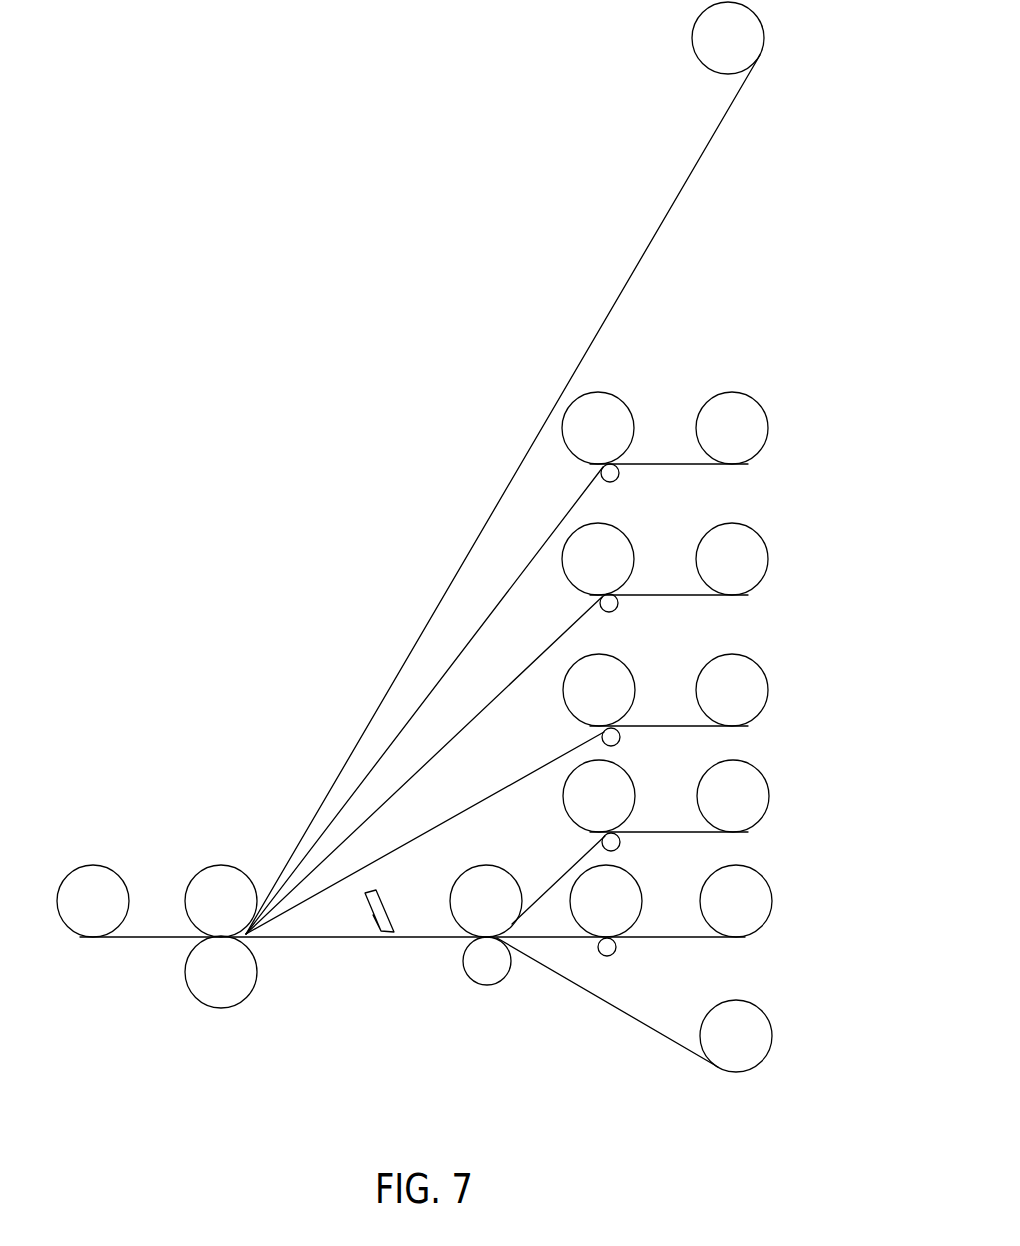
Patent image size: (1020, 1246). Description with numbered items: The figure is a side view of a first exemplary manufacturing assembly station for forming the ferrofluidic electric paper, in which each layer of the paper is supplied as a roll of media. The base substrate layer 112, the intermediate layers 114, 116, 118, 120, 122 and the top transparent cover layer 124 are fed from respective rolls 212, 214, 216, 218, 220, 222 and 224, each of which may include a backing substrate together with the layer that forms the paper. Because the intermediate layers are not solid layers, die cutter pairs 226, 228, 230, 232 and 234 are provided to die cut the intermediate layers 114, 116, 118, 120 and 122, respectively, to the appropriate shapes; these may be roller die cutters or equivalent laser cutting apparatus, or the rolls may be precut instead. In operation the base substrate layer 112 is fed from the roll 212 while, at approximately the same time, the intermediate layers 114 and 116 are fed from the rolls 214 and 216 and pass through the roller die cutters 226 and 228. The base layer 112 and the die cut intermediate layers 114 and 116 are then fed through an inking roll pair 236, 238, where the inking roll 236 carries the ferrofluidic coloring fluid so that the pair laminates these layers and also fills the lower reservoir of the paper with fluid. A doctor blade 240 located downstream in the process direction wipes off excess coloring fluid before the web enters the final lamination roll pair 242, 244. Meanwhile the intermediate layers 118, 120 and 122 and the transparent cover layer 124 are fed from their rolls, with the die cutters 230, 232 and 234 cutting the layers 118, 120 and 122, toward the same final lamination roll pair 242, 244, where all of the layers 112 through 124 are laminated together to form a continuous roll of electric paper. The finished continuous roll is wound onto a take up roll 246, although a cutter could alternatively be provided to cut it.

The base substrate layer 112 is at (590, 994).
The intermediate layer 114 is at (562, 938).
The intermediate layer 116 is at (578, 857).
The intermediate layer 118 is at (493, 790).
The intermediate layer 120 is at (485, 708).
The intermediate layer 122 is at (497, 608).
The top transparent cover layer 124 is at (505, 485).
The roll 212 is at (772, 1042).
The roll 214 is at (772, 910).
The roll 216 is at (770, 808).
The roll 218 is at (770, 702).
The roll 220 is at (770, 572).
The roll 222 is at (770, 442).
The roll 224 is at (768, 50).
The die cutter pair 226 is at (632, 876).
The die cutter pair 228 is at (633, 777).
The die cutter pair 230 is at (633, 670).
The die cutter pair 232 is at (633, 540).
The die cutter pair 234 is at (633, 410).
The inking roll 236 is at (466, 871).
The inking roll 238 is at (477, 984).
The doctor blade 240 is at (376, 890).
The final lamination roll 242 is at (196, 872).
The final lamination roll 244 is at (256, 990).
The take up roll 246 is at (97, 866).